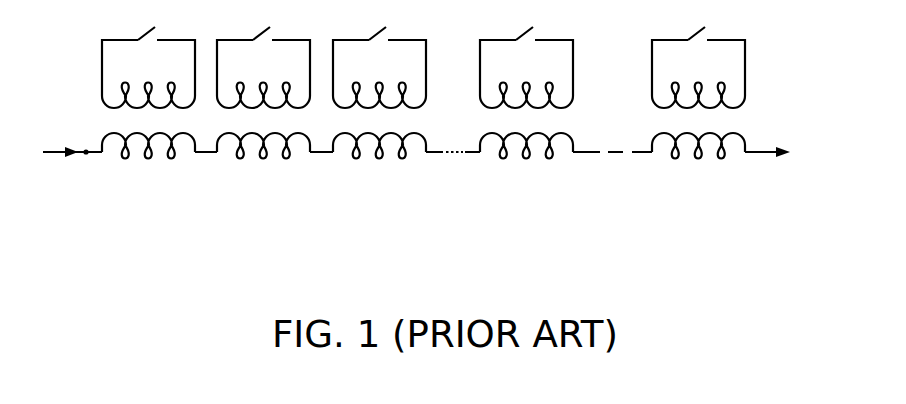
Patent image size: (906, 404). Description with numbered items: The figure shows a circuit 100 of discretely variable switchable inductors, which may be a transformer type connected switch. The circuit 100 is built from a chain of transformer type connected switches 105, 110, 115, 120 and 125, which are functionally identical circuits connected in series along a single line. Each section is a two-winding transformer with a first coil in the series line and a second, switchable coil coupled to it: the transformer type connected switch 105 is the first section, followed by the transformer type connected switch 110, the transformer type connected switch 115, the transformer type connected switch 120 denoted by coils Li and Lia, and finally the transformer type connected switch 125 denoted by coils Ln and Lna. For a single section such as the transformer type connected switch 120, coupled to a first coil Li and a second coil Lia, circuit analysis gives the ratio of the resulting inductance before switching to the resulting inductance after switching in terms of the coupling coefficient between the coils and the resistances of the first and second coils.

The circuit 100 is at (416, 154).
The transformer type connected switch 105 is at (172, 158).
The transformer type connected switch 110 is at (287, 158).
The transformer type connected switch 115 is at (403, 158).
The transformer type connected switch 120 is at (550, 158).
The transformer type connected switch 125 is at (722, 158).